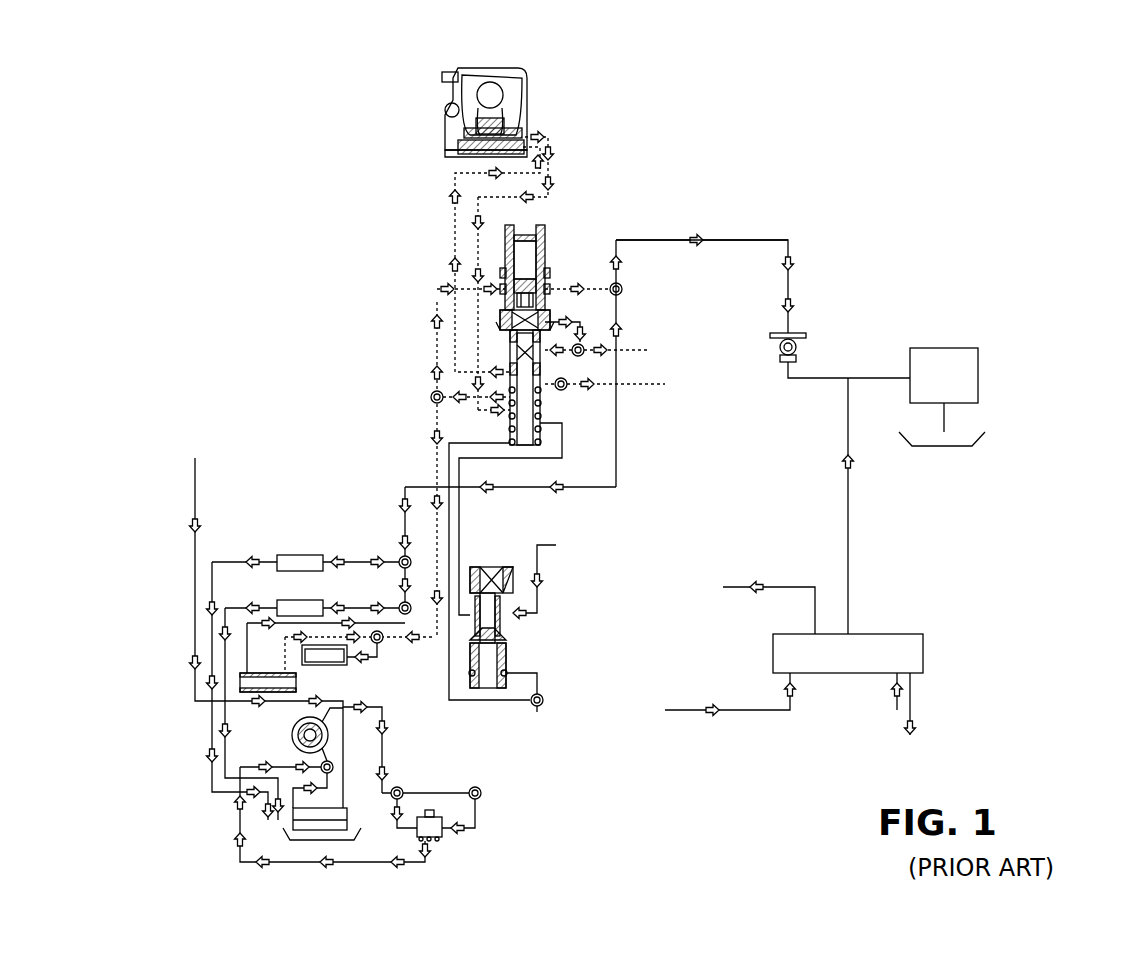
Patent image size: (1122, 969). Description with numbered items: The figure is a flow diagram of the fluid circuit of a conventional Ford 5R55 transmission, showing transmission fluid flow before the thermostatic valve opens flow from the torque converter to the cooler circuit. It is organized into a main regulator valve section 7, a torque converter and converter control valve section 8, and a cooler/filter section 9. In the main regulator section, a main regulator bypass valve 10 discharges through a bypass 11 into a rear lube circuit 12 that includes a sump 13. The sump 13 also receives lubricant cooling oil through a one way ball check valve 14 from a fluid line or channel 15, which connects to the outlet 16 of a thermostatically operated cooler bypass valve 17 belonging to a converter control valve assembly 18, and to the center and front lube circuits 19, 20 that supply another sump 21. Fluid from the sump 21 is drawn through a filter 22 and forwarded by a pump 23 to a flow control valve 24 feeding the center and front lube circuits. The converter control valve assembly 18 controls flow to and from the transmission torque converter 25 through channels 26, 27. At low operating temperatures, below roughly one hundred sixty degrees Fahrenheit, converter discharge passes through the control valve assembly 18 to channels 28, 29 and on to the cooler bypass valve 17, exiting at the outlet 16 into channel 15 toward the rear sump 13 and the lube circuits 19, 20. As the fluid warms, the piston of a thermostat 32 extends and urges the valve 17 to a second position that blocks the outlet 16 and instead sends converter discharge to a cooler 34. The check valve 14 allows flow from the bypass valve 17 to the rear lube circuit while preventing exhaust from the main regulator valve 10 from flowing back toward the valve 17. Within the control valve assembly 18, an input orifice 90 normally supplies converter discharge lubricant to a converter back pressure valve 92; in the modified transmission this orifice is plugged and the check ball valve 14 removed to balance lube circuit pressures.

The main regulator valve section 7 is at (828, 744).
The torque converter and converter control valve section 8 is at (404, 344).
The cooler/filter section 9 is at (176, 744).
The main regulator bypass valve 10 is at (923, 634).
The bypass 11 is at (848, 508).
The rear lube circuit 12 is at (945, 348).
The sump 13 is at (942, 448).
The one way ball check valve 14 is at (796, 334).
The fluid line or channel 15 is at (671, 240).
The outlet 16 is at (557, 289).
The thermostatically operated cooler bypass valve 17 is at (510, 250).
The converter control valve assembly 18 is at (554, 364).
The center lube circuit 19 is at (300, 555).
The front lube circuit 20 is at (303, 600).
The sump 21 is at (325, 845).
The filter 22 is at (347, 817).
The pump 23 is at (292, 728).
The flow control valve 24 is at (455, 840).
The transmission torque converter 25 is at (428, 132).
The channel 26 is at (455, 222).
The channel 27 is at (548, 195).
The channel 28 is at (430, 398).
The channel 29 is at (437, 303).
The thermostat 32 is at (522, 232).
The cooler 34 is at (297, 683).
The input orifice 90 is at (540, 367).
The converter back pressure valve 92 is at (512, 660).